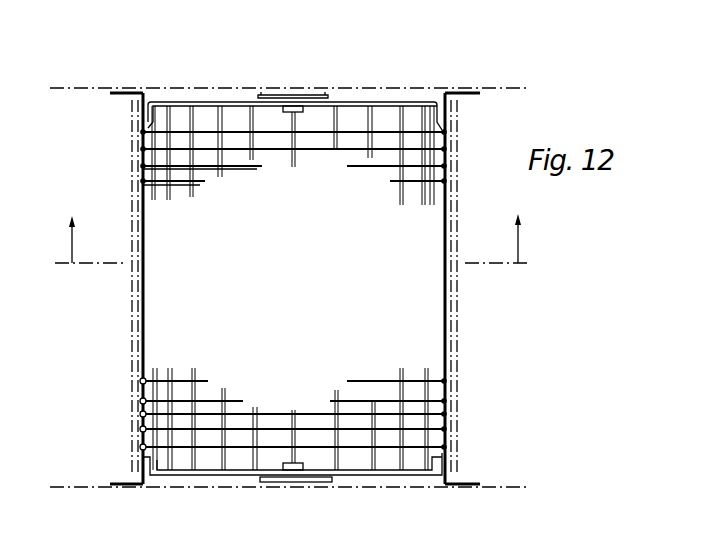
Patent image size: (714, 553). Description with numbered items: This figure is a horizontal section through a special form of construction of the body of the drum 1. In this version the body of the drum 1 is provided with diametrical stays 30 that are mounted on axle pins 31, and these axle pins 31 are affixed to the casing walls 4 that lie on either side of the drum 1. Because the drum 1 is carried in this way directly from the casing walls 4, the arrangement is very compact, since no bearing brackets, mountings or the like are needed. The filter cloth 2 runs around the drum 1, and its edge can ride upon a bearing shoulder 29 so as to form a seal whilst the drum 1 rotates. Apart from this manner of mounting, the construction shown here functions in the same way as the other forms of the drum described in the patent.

The drum 1 is at (430, 313).
The filter cloth 2 is at (136, 326).
The casing walls 4 is at (90, 91).
The bearing shoulder 29 is at (465, 479).
The diametrical stays 30 is at (293, 97).
The axle pins 31 is at (275, 476).